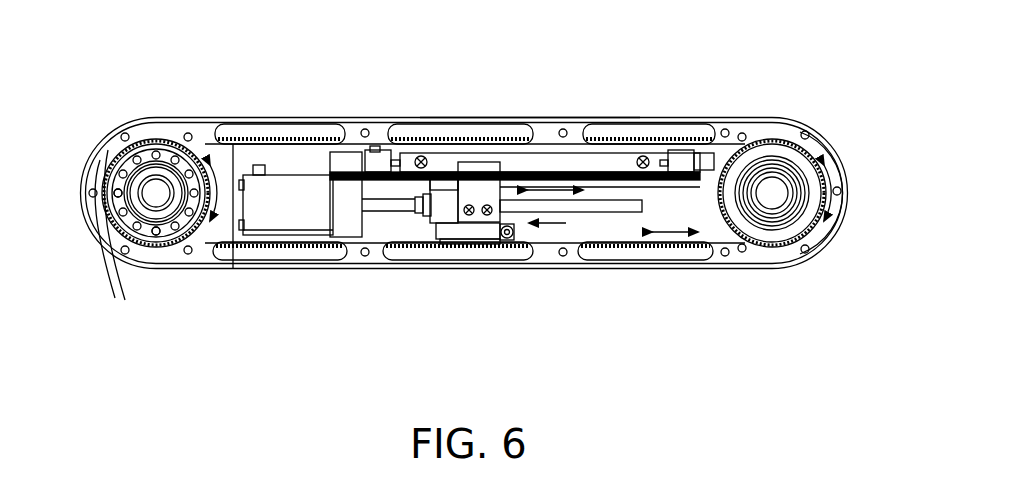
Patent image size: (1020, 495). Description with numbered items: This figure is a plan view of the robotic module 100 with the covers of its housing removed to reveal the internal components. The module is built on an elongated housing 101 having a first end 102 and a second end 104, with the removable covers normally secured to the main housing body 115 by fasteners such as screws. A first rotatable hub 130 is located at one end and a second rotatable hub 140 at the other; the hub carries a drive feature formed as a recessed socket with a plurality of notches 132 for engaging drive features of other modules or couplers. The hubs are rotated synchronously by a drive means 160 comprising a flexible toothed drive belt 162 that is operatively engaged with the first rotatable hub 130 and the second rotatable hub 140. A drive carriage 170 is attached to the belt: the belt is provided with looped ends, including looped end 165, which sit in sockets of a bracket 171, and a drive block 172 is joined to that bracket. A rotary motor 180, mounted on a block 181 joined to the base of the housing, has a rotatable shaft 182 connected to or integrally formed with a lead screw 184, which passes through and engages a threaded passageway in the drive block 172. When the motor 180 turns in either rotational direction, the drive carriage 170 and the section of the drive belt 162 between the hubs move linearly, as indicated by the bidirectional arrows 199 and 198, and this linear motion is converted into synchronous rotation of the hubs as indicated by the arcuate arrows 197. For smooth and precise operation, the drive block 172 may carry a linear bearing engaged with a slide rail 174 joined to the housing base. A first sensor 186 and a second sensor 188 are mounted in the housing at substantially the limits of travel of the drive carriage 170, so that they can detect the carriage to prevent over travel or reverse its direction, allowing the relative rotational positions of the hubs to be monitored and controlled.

The robotic module 100 is at (679, 68).
The housing 101 is at (584, 114).
The first end 102 is at (82, 206).
The second end 104 is at (838, 232).
The main housing body 115 is at (534, 114).
The first rotatable hub 130 is at (157, 136).
The notches 132 is at (100, 205).
The second rotatable hub 140 is at (828, 146).
The drive means 160 is at (486, 259).
The drive belt 162 is at (242, 140).
The looped end 165 is at (507, 240).
The drive carriage 170 is at (566, 224).
The bracket 171 is at (515, 232).
The drive block 172 is at (446, 214).
The slide rail 174 is at (405, 171).
The rotary motor 180 is at (304, 221).
The block 181 is at (343, 228).
The rotatable shaft 182 is at (378, 209).
The lead screw 184 is at (640, 205).
The first sensor 186 is at (372, 150).
The second sensor 188 is at (684, 150).
The arcuate arrows 197 is at (221, 205).
The bidirectional arrow 198 is at (675, 234).
The bidirectional arrow 199 is at (548, 190).